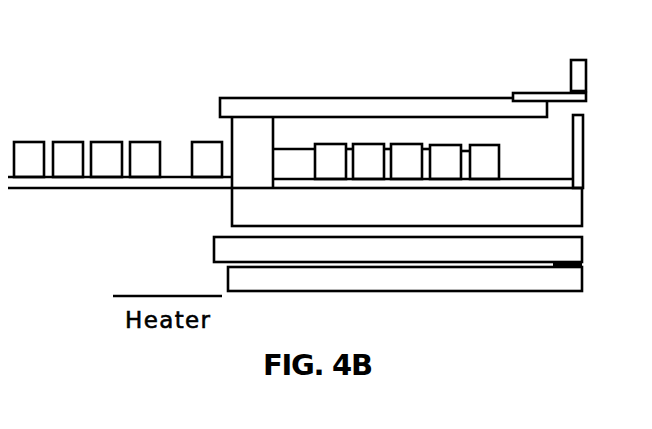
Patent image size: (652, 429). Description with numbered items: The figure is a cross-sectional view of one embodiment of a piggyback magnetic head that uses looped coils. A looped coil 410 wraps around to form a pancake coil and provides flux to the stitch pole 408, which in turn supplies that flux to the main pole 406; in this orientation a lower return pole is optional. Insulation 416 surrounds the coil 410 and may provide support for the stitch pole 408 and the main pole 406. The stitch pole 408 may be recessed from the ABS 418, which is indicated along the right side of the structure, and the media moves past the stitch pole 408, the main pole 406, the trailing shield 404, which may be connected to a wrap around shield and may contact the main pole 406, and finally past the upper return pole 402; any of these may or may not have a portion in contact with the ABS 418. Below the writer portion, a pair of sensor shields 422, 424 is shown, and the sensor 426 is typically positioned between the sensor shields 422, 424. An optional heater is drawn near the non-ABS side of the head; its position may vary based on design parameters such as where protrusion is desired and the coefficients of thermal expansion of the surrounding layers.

The upper return pole 402 is at (586, 73).
The trailing shield 404 is at (583, 157).
The main pole 406 is at (550, 93).
The stitch pole 408 is at (410, 97).
The looped coil 410 is at (480, 143).
The insulation 416 is at (459, 219).
The ABS 418 is at (590, 204).
The sensor shield 422 is at (214, 250).
The sensor shield 424 is at (228, 270).
The sensor 426 is at (572, 262).